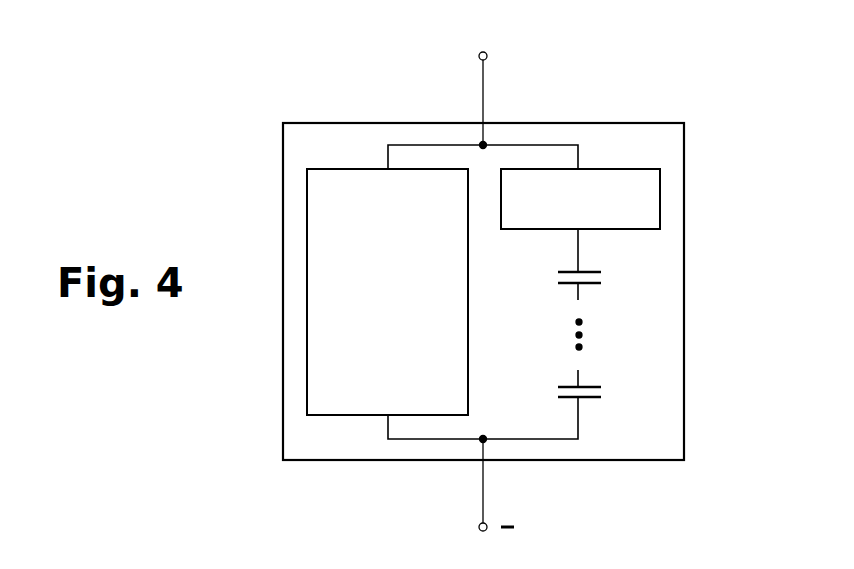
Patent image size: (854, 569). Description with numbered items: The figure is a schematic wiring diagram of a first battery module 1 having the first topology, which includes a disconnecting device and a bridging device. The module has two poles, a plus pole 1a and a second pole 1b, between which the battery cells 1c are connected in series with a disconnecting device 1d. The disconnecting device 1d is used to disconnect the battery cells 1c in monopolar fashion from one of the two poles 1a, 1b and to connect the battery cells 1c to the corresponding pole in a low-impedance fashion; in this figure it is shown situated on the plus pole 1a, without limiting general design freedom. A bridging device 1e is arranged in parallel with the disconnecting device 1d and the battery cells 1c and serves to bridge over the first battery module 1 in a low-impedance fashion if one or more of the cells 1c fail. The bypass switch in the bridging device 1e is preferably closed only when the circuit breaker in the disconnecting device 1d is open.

The first battery module 1 is at (672, 147).
The plus pole 1a is at (480, 57).
The pole 1b is at (480, 527).
The battery cells 1c is at (605, 250).
The disconnecting device 1d is at (511, 222).
The bridging device 1e is at (460, 389).